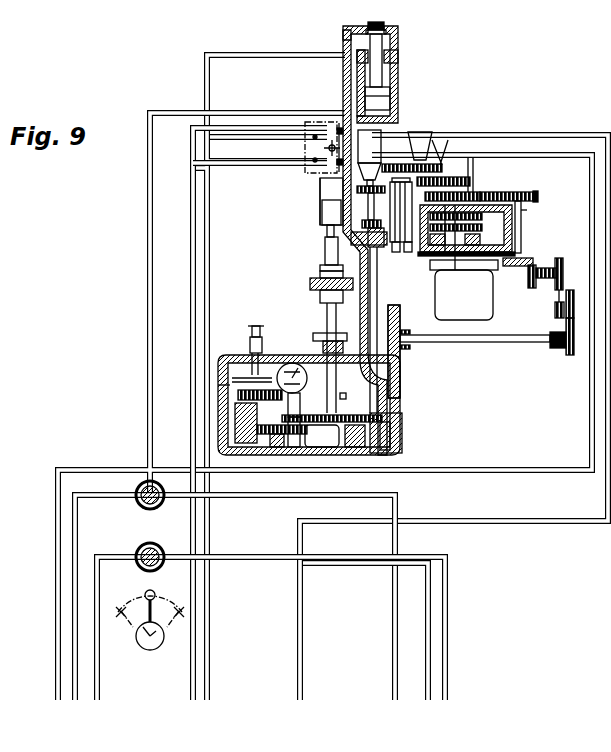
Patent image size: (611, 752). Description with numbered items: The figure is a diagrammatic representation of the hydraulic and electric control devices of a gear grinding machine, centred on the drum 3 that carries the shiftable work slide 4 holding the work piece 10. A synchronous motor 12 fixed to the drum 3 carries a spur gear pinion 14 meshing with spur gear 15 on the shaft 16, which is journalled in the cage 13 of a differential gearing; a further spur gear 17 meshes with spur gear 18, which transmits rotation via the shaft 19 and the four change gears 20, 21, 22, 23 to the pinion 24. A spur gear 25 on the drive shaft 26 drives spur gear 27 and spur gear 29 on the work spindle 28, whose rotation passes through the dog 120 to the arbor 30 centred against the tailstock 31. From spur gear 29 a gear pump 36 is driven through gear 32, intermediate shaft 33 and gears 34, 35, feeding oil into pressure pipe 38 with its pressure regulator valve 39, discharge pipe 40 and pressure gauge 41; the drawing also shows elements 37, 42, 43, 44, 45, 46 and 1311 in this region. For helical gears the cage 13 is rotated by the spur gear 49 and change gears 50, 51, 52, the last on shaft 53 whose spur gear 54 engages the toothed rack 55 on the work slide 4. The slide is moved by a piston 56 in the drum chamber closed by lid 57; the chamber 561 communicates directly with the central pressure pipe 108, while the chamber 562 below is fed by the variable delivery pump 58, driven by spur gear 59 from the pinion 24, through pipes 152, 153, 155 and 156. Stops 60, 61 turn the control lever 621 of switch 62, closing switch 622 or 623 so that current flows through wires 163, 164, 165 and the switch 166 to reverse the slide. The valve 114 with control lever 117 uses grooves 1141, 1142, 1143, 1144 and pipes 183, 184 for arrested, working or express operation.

The drum 3 is at (396, 244).
The work slide 4 is at (360, 318).
The work piece 10 is at (318, 264).
The motor 12 is at (436, 302).
The cage of differential gearing 13 is at (520, 235).
The spur gear pinion 14 is at (462, 262).
The spur gear 15 is at (398, 252).
The shaft 16 is at (410, 253).
The spur gear 17 is at (445, 163).
The spur gear 18 is at (466, 227).
The shaft 19 is at (473, 192).
The change gear 20 is at (475, 160).
The change gear 21 is at (446, 178).
The change gear 22 is at (430, 150).
The change gear 23 is at (410, 163).
The pinion 24 is at (346, 212).
The spur gear 25 is at (326, 228).
The drive shaft 26 is at (378, 296).
The spur gear 27 is at (390, 414).
The work spindle 28 is at (346, 396).
The spur gear 29 is at (344, 415).
The arbor 30 is at (325, 314).
The tailstock 31 is at (318, 190).
The gear 32 is at (300, 410).
The intermediate shaft 33 is at (292, 456).
The gear 34 is at (310, 456).
The gear 35 is at (268, 456).
The gear pump 36 is at (236, 395).
The piston 37 is at (234, 420).
The pressure pipe 38 is at (249, 352).
The pressure regulator valve 39 is at (260, 330).
The discharge pipe 40 is at (228, 456).
The pressure gauge 41 is at (295, 362).
The stop 42 is at (537, 196).
The arm 43 is at (527, 215).
The bearing 44 is at (530, 258).
The gear 45 is at (527, 279).
The shaft 46 is at (542, 280).
The spur gear 49 is at (562, 258).
The spur gear 50 is at (556, 308).
The spur gear 51 is at (571, 290).
The change gear 52 is at (570, 355).
The shaft 53 is at (505, 335).
The spur gear 54 is at (400, 322).
The toothed rack 55 is at (400, 367).
The piston 56 is at (392, 88).
The lid 57 is at (386, 44).
The variable delivery pump 58 is at (383, 138).
The spur gear 59 is at (378, 193).
The adjustable stop 60 is at (330, 201).
The adjustable stop 61 is at (334, 120).
The switch 62 is at (303, 124).
The central pressure pipe 108 is at (248, 56).
The valve 114 is at (137, 552).
The control lever 117 is at (145, 592).
The dog 120 is at (312, 336).
The pipe 152 is at (450, 468).
The pipe 153 is at (456, 518).
The pipe 155 is at (262, 497).
The pipe 156 is at (160, 402).
The wire 163 is at (231, 165).
The wire 164 is at (223, 126).
The wire 165 is at (447, 584).
The switch 166 is at (347, 564).
The pipe 183 is at (99, 638).
The pipe 184 is at (73, 548).
The chamber 561 is at (392, 57).
The chamber 562 is at (391, 102).
The control lever 621 is at (338, 127).
The switch 622 is at (312, 162).
The switch 623 is at (312, 139).
The annular groove 1141 is at (145, 542).
The longitudinal groove 1142 is at (158, 506).
The groove 1143 is at (160, 490).
The groove 1144 is at (140, 502).
The rack 1311 is at (509, 187).